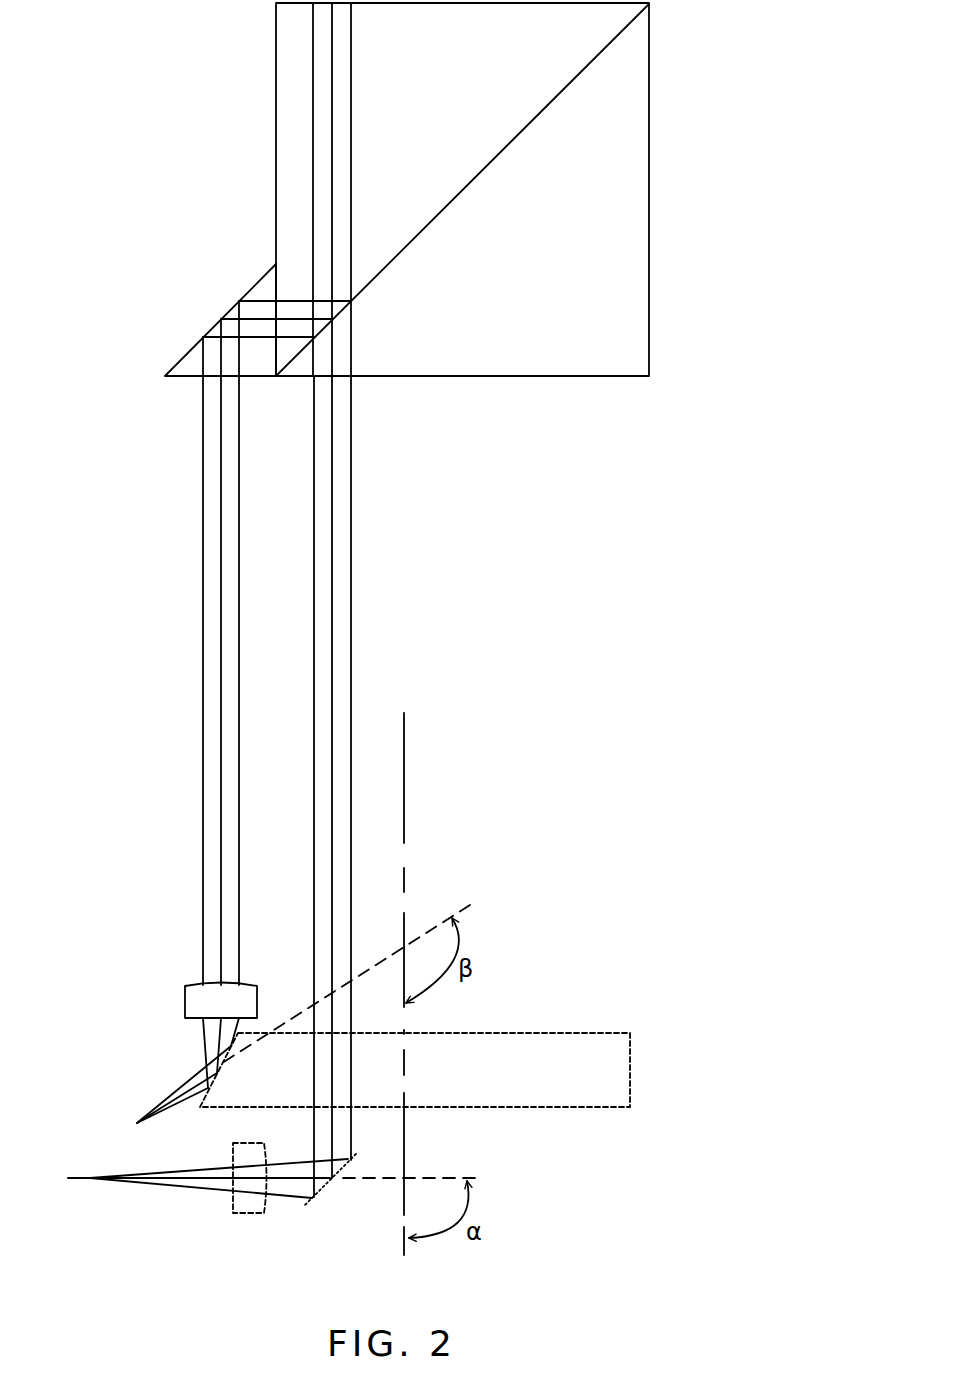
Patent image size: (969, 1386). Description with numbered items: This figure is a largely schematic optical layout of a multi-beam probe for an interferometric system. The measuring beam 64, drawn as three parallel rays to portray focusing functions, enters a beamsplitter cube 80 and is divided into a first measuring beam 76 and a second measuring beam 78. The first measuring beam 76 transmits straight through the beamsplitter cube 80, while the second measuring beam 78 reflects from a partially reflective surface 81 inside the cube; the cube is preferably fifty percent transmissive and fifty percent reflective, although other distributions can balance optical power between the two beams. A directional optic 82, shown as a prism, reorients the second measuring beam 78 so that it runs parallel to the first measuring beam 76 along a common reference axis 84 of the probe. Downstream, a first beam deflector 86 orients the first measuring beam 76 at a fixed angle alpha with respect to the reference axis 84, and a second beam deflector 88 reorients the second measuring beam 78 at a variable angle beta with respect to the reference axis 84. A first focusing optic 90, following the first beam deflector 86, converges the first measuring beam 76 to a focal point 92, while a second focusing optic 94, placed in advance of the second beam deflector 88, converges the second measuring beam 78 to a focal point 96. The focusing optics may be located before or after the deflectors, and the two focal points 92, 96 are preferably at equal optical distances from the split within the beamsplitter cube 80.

The measuring beam 64 is at (311, 110).
The first measuring beam 76 is at (353, 570).
The second measuring beam 78 is at (200, 645).
The beamsplitter cube 80 is at (588, 336).
The partially reflective surface 81 is at (523, 123).
The directional optic 82 is at (178, 362).
The reference axis 84 is at (404, 783).
The first beam deflector 86 is at (322, 1192).
The second beam deflector 88 is at (200, 1098).
The first focusing optic 90 is at (243, 1213).
The focal point 92 is at (57, 1197).
The second focusing optic 94 is at (188, 993).
The focal point 96 is at (130, 1128).